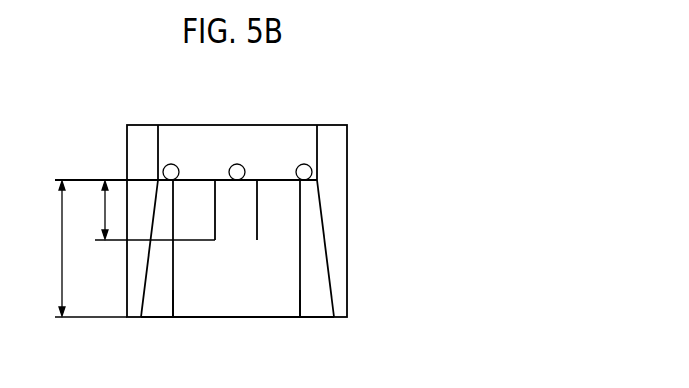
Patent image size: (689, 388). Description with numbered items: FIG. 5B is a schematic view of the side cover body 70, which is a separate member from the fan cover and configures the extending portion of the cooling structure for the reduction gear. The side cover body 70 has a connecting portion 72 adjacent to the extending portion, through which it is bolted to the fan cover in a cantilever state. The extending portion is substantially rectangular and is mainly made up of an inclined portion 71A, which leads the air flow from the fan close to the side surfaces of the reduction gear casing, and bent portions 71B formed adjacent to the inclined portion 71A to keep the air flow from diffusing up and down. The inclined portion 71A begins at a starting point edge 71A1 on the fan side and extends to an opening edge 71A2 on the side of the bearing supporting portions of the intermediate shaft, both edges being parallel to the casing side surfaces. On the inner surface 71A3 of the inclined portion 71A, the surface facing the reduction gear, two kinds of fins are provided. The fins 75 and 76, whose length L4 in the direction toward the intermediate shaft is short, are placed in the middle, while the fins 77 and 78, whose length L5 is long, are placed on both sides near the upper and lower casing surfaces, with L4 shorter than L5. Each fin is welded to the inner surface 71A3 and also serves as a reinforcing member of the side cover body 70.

The side cover body 70 is at (356, 146).
The inclined portion 71A is at (273, 252).
The starting point edge 71A1 is at (282, 178).
The opening edge 71A2 is at (252, 317).
The inner surface 71A3 is at (404, 230).
The bent portion 71B is at (337, 203).
The connecting portion 72 is at (262, 150).
The fin 75 is at (214, 222).
The fin 76 is at (255, 222).
The fin 77 is at (172, 292).
The fin 78 is at (300, 298).
The length of short fins L4 is at (103, 200).
The length of long fins L5 is at (60, 232).